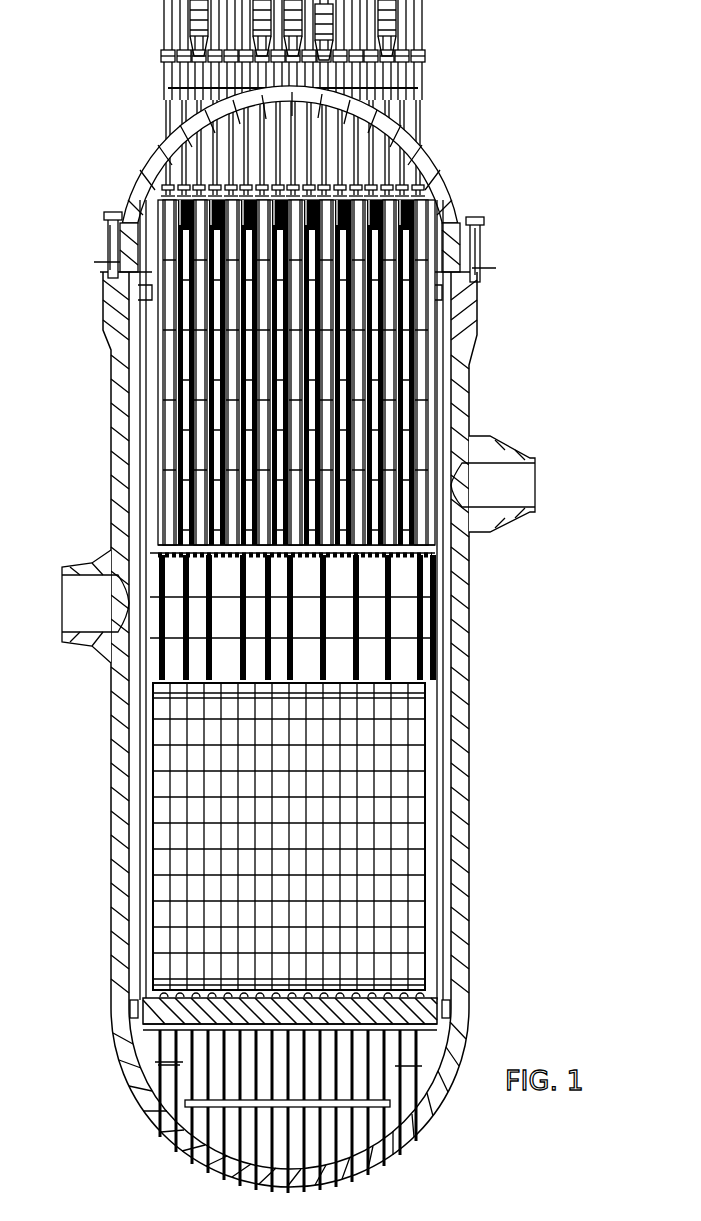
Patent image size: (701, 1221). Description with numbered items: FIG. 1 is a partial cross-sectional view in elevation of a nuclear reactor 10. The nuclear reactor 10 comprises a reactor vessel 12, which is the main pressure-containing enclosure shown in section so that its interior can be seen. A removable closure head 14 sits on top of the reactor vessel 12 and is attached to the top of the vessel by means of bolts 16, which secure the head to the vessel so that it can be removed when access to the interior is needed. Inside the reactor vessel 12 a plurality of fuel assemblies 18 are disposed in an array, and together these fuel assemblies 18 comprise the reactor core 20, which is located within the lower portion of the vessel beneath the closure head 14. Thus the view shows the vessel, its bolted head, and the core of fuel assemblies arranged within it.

The nuclear reactor 10 is at (552, 545).
The reactor vessel 12 is at (120, 440).
The closure head 14 is at (150, 170).
The bolts 16 is at (108, 216).
The fuel assemblies 18 is at (165, 728).
The reactor core 20 is at (307, 808).